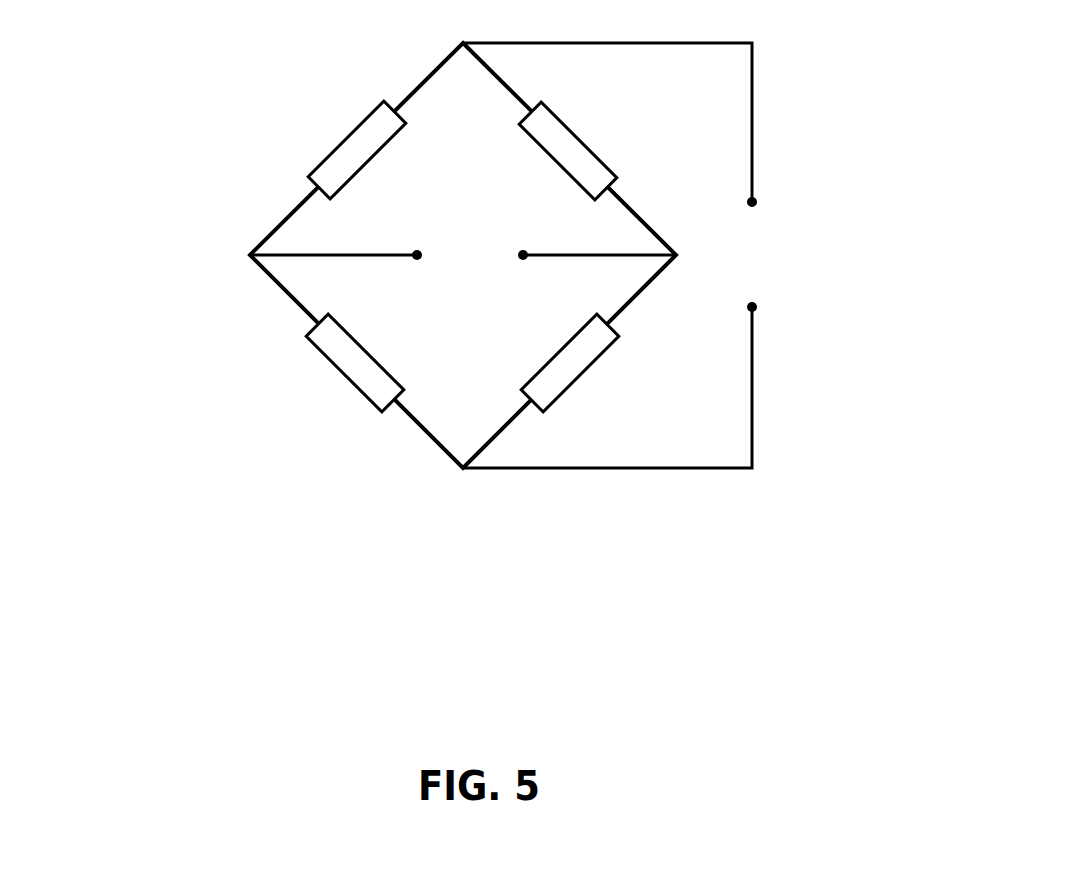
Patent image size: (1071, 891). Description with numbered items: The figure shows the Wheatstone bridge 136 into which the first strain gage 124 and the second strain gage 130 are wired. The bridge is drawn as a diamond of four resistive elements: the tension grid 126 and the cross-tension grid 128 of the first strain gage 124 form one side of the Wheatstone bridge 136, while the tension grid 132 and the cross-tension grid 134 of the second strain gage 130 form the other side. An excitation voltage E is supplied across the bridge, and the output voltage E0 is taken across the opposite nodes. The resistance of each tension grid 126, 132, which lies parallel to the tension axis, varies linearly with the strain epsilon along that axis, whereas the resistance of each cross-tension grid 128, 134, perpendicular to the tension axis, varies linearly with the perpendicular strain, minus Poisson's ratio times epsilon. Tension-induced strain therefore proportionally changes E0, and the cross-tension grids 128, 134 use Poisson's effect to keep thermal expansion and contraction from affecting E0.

The first strain gage 124 is at (120, 188).
The tension grid 126 is at (348, 137).
The cross-tension grid 128 is at (340, 377).
The second strain gage 130 is at (806, 186).
The tension grid 132 is at (580, 373).
The cross-tension grid 134 is at (582, 145).
The Wheatstone bridge 136 is at (438, 533).